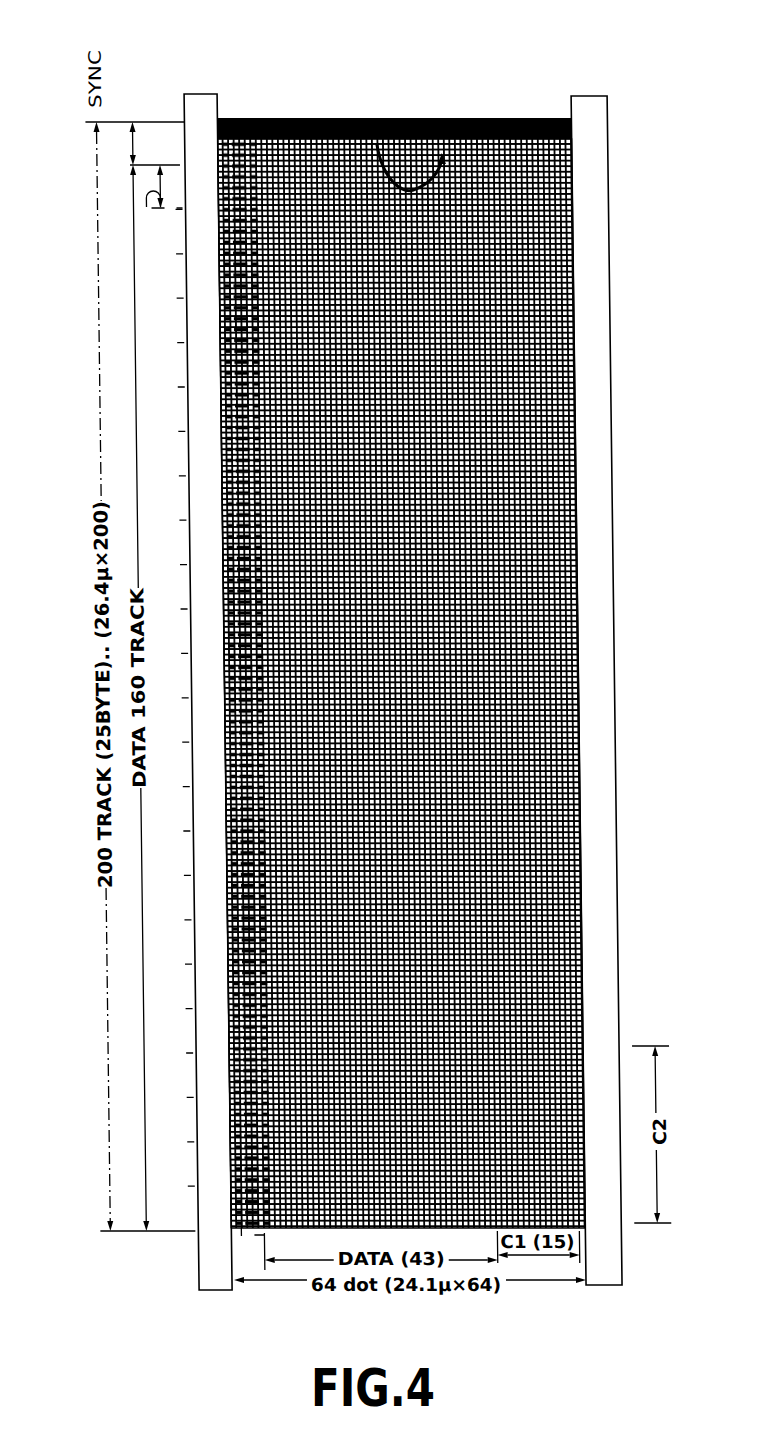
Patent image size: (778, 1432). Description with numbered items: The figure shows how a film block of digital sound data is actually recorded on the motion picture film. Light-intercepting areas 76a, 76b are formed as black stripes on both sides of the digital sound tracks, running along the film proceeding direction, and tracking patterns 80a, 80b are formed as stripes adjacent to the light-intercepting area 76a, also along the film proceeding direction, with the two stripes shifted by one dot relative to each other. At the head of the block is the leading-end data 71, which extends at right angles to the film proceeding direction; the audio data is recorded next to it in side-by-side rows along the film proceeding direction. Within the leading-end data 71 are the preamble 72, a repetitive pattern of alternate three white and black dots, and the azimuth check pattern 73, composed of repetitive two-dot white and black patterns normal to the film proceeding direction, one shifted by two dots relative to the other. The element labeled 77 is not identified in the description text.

The leading-end data 71 is at (390, 97).
The preamble 72 is at (412, 110).
The azimuth check pattern 73 is at (365, 110).
The light-intercepting area 76a is at (173, 676).
The light-intercepting area 76b is at (559, 100).
The data area 77 is at (140, 178).
The tracking pattern 80a is at (228, 108).
The tracking pattern 80b is at (238, 101).